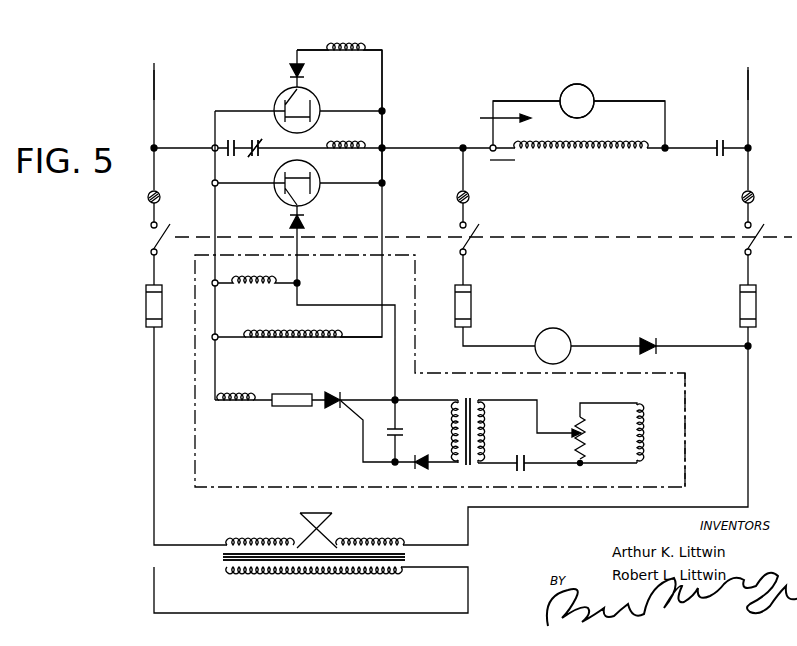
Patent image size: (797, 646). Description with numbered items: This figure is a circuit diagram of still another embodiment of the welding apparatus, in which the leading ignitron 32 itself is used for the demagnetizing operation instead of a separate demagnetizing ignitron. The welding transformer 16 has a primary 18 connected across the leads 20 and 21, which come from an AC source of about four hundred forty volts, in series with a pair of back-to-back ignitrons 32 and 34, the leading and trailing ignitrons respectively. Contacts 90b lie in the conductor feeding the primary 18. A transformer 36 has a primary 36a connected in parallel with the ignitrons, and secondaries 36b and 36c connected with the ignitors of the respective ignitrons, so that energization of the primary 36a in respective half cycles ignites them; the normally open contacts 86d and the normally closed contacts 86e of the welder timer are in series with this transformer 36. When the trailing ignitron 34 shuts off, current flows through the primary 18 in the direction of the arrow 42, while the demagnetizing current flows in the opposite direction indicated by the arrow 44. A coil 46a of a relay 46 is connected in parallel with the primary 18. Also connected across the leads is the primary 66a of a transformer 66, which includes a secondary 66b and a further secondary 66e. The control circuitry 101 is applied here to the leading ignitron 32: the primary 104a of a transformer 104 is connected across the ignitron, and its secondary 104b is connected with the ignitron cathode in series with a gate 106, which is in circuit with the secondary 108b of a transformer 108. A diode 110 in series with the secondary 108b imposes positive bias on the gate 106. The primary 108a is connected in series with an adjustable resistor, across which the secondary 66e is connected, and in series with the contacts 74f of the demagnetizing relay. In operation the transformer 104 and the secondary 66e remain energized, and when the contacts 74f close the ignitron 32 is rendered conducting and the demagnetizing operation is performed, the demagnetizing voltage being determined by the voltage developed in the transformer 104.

The transformer 16 is at (584, 158).
The primary 18 is at (630, 155).
The lead 20 is at (748, 105).
The lead 21 is at (154, 104).
The leading ignitron 32 is at (311, 196).
The trailing ignitron 34 is at (312, 96).
The transformer 36 is at (378, 140).
The primary 36a is at (366, 138).
The secondary 36b is at (273, 282).
The secondary 36c is at (369, 46).
The arrow 42 is at (507, 116).
The arrow 44 is at (515, 166).
The relay 46 is at (597, 90).
The coil 46a is at (573, 92).
The transformer 66 is at (198, 553).
The primary 66a is at (246, 540).
The secondary 66b is at (268, 570).
The secondary 66e is at (642, 425).
The contacts 74f is at (527, 466).
The normally open contacts 86d is at (228, 137).
The normally closed contacts 86e is at (257, 138).
The contacts 90b is at (722, 156).
The control 101 is at (690, 438).
The transformer 104 is at (302, 343).
The primary 104a is at (284, 333).
The secondary 104b is at (257, 403).
The gate 106 is at (337, 403).
The transformer 108 is at (466, 396).
The primary 108a is at (500, 438).
The secondary 108b is at (452, 438).
The diode 110 is at (418, 468).